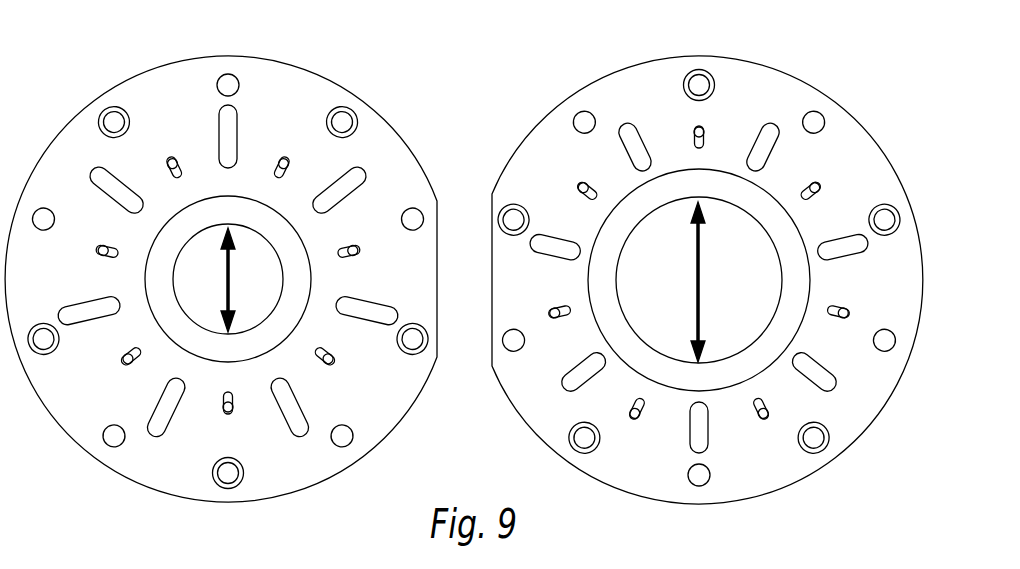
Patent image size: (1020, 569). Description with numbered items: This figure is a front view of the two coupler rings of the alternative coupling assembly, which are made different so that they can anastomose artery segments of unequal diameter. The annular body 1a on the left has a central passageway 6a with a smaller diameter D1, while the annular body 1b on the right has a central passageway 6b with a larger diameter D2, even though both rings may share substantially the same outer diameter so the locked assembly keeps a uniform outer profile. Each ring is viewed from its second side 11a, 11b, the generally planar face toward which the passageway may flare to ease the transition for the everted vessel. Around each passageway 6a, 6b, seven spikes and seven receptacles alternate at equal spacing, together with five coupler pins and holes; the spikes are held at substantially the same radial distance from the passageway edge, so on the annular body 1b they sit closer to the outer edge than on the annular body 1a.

The annular body 1a is at (165, 70).
The second side 11a is at (281, 80).
The central passageway 6a is at (282, 300).
The diameter D1 is at (229, 280).
The annular body 1b is at (847, 113).
The second side 11b is at (750, 88).
The central passageway 6b is at (780, 300).
The diameter D2 is at (696, 282).